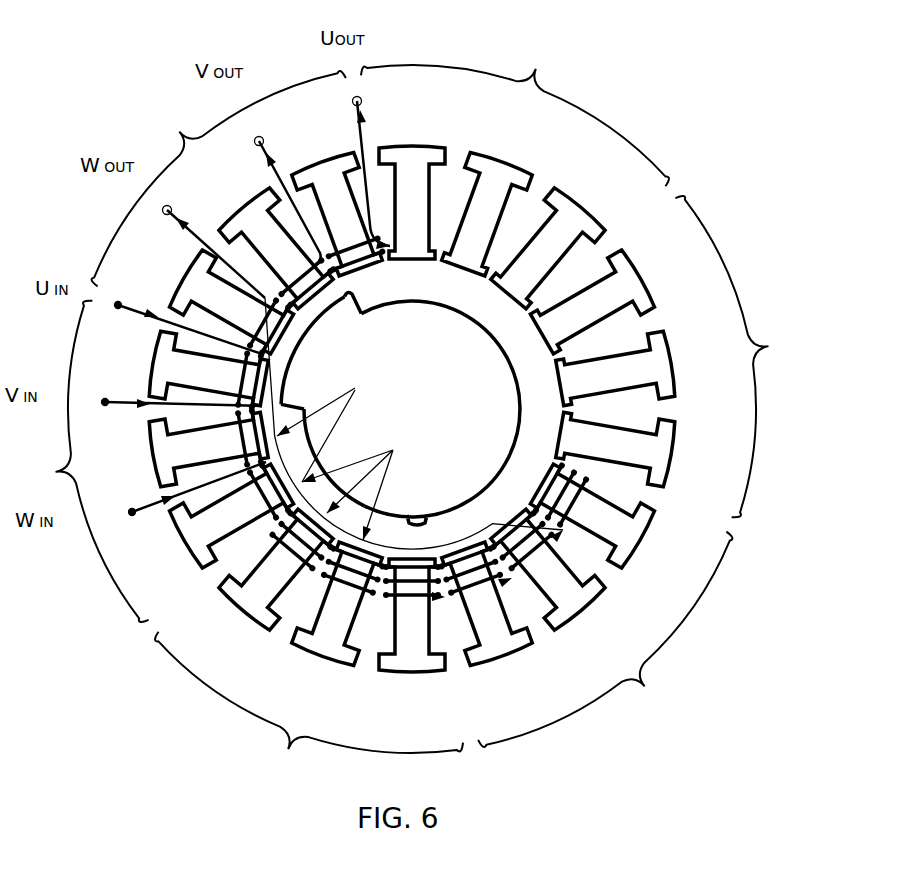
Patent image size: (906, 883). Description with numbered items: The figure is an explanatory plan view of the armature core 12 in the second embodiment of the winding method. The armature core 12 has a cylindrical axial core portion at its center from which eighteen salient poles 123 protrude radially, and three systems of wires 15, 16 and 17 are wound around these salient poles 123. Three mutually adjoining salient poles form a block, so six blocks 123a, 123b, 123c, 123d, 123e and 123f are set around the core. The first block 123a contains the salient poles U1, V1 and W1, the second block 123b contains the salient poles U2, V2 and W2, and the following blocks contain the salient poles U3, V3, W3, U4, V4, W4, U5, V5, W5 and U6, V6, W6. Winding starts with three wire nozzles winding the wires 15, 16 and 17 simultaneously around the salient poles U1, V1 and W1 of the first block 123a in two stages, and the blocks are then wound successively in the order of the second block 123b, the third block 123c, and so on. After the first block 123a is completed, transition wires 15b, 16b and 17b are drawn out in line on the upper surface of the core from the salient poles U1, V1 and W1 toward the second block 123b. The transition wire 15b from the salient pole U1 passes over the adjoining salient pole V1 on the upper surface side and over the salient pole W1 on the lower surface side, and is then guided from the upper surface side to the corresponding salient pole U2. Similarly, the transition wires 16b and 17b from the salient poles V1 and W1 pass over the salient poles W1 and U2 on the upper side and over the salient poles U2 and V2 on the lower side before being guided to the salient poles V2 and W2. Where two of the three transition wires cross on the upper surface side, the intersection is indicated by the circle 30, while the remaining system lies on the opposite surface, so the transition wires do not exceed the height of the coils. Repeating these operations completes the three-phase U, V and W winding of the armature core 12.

The armature core 12 is at (442, 389).
The wire 15 is at (184, 314).
The wire 16 is at (170, 391).
The wire 17 is at (180, 494).
The transition wire 15b is at (280, 380).
The transition wire 16b is at (340, 416).
The transition wire 17b is at (300, 482).
The circle 30 is at (349, 455).
The salient pole 123 is at (618, 468).
The first block 123a is at (75, 466).
The second block 123b is at (299, 718).
The third block 123c is at (623, 661).
The fourth block 123d is at (752, 352).
The fifth block 123e is at (524, 100).
The sixth block 123f is at (200, 157).
The salient pole U1 is at (162, 363).
The salient pole V1 is at (162, 462).
The salient pole W1 is at (182, 542).
The salient pole U2 is at (254, 618).
The salient pole V2 is at (326, 663).
The salient pole W2 is at (413, 674).
The salient pole U3 is at (514, 663).
The salient pole V3 is at (590, 612).
The salient pole W3 is at (650, 535).
The salient pole U4 is at (665, 456).
The salient pole V4 is at (662, 353).
The salient pole W4 is at (636, 279).
The salient pole U5 is at (572, 210).
The salient pole V5 is at (497, 168).
The salient pole W5 is at (416, 147).
The salient pole U6 is at (328, 165).
The salient pole V6 is at (252, 203).
The salient pole W6 is at (190, 280).